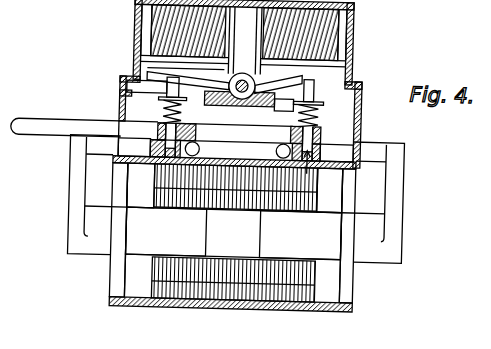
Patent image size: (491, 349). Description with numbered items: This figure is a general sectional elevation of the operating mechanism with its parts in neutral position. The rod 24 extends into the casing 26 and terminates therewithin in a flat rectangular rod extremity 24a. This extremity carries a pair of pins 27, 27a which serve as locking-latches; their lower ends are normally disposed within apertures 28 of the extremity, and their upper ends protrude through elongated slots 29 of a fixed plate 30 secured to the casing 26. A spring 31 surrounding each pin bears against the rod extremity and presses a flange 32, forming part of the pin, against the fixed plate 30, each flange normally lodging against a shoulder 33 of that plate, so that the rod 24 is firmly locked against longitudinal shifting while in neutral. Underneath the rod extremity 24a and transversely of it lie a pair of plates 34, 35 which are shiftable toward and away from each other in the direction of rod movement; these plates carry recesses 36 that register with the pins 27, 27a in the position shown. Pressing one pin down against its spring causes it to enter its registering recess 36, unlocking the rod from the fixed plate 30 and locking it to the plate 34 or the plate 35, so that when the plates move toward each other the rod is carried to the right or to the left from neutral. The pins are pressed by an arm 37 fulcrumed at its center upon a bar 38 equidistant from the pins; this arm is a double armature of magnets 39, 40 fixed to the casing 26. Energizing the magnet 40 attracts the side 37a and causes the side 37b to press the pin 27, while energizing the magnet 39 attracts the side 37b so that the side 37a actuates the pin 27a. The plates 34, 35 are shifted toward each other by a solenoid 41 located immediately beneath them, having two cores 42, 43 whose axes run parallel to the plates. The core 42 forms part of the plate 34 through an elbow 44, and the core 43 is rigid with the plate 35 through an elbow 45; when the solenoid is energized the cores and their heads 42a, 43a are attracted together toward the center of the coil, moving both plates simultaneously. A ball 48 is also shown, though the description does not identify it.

The rod 24 is at (33, 134).
The rod extremity 24a is at (236, 133).
The casing 26 is at (118, 90).
The pin 27 is at (166, 88).
The pin 27a is at (312, 87).
The aperture 28 is at (163, 112).
The elongated slot 29 is at (143, 100).
The fixed plate 30 is at (223, 99).
The spring 31 is at (322, 122).
The flange 32 is at (316, 112).
The shoulder 33 is at (181, 112).
The plate 34 is at (149, 149).
The plate 35 is at (336, 153).
The recess 36 is at (322, 176).
The arm 37 is at (212, 81).
The side of arm 37a is at (295, 79).
The side of arm 37b is at (185, 77).
The bar 38 is at (240, 80).
The magnet 39 is at (153, 35).
The magnet 40 is at (328, 29).
The solenoid 41 is at (244, 303).
The core 42 is at (165, 231).
The core head 42a is at (118, 296).
The core 43 is at (300, 235).
The core head 43a is at (352, 279).
The elbow 44 is at (70, 195).
The elbow 45 is at (402, 190).
The ball 48 is at (276, 149).